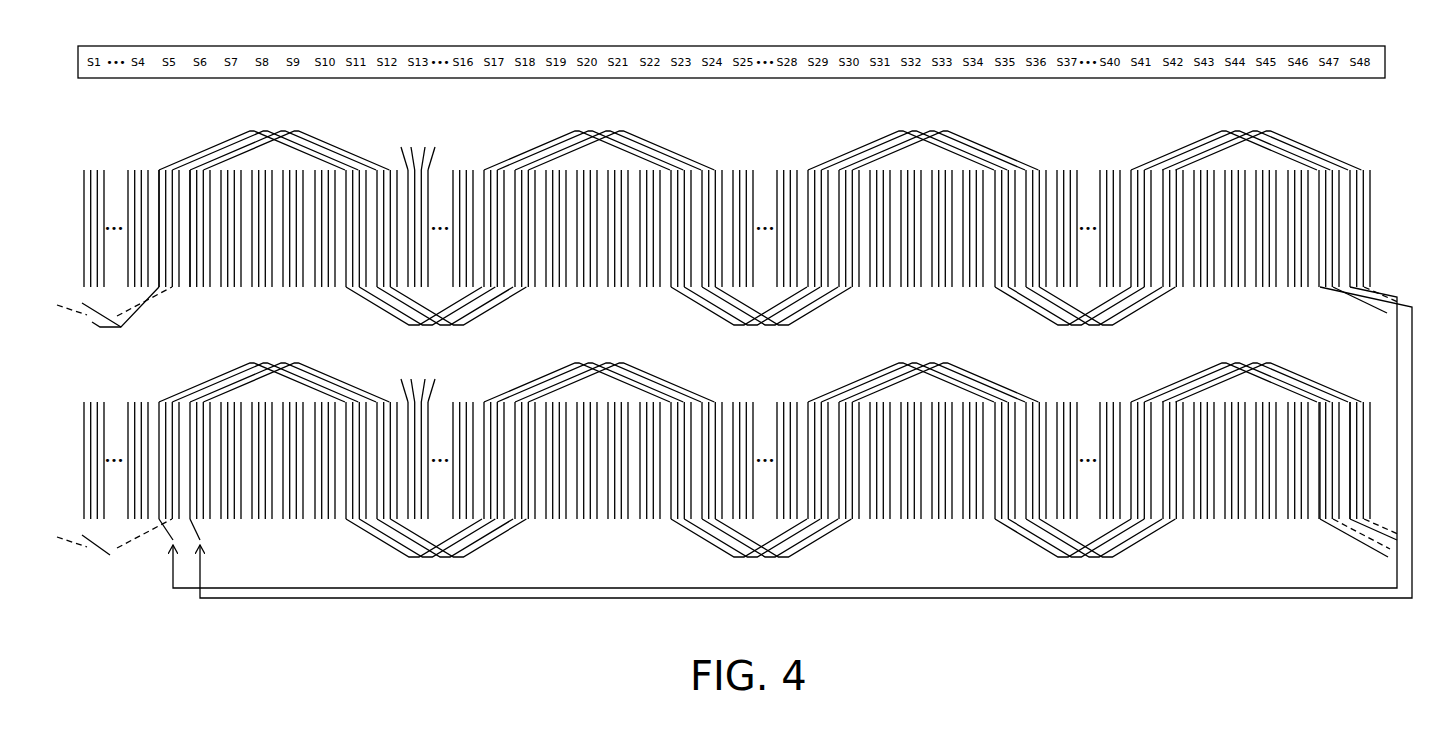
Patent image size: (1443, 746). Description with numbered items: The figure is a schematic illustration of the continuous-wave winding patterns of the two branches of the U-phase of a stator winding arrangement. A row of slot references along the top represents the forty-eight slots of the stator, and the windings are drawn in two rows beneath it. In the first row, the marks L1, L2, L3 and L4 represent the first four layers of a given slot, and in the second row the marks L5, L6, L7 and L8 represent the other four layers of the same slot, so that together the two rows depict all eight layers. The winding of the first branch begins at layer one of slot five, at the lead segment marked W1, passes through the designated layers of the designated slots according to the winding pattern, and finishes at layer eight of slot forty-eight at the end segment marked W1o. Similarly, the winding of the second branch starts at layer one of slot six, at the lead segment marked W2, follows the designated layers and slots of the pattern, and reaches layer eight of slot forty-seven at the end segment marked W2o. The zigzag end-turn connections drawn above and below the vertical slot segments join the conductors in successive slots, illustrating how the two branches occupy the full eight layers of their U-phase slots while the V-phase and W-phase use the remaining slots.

The first layer L1 is at (402, 160).
The second layer L2 is at (412, 160).
The third layer L3 is at (422, 160).
The fourth layer L4 is at (431, 160).
The fifth layer L5 is at (402, 393).
The sixth layer L6 is at (412, 393).
The seventh layer L7 is at (423, 393).
The eighth layer L8 is at (432, 393).
The lead segment of W1 branch W1 is at (161, 292).
The lead segment of W2 branch W2 is at (192, 292).
The end segment of W1 branch W1o is at (1388, 563).
The end segment of W2 branch W2o is at (1338, 530).